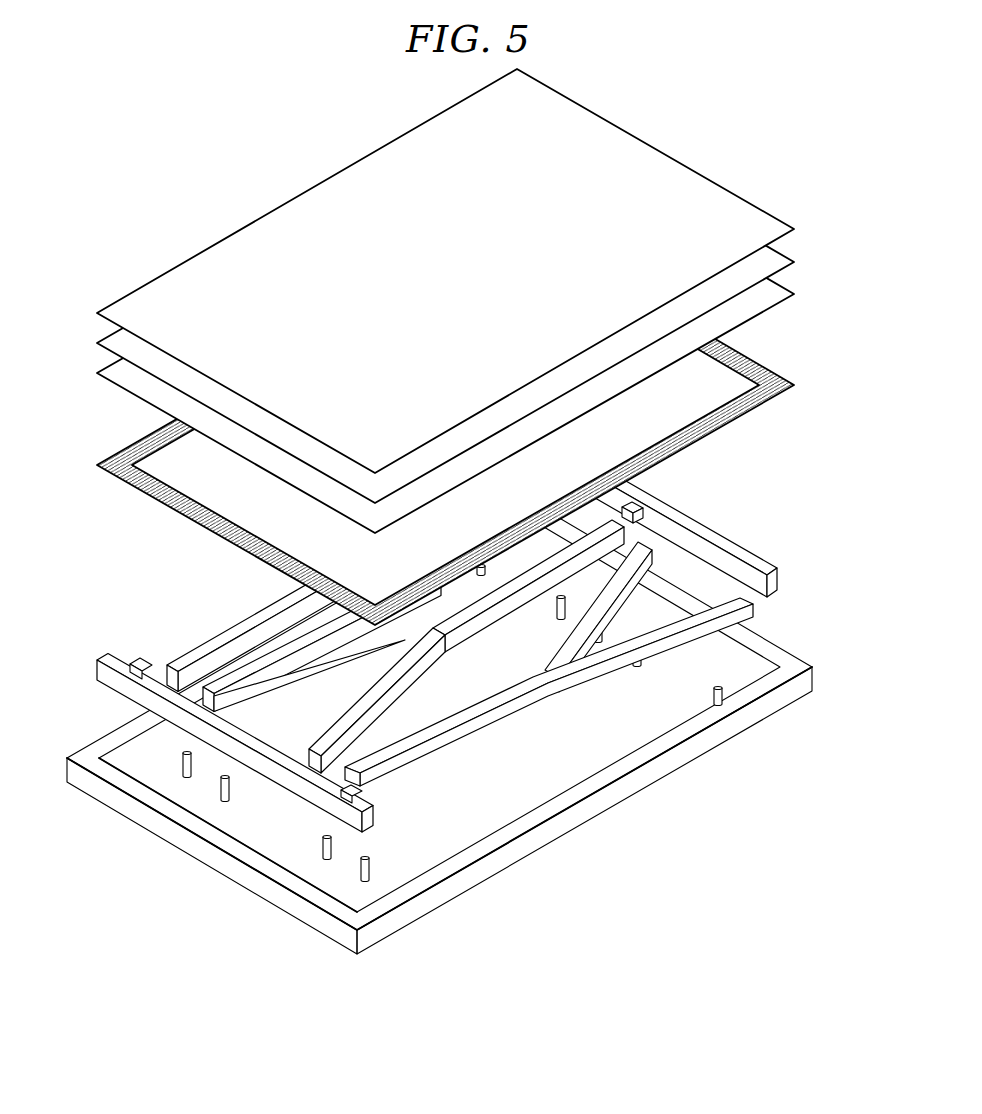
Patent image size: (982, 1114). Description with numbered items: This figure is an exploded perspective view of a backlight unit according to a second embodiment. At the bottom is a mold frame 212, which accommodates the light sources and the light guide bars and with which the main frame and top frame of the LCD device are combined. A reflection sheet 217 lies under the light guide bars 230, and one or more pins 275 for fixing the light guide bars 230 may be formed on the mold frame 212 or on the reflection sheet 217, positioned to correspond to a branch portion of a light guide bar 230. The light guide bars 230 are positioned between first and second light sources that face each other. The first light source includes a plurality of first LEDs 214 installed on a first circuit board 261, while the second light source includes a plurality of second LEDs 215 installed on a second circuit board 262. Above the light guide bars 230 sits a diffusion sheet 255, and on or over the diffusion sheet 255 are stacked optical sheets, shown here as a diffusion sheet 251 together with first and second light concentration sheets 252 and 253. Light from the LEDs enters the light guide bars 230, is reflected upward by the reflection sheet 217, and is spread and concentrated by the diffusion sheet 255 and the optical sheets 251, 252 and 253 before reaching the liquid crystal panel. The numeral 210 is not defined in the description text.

The optical sheet (diffusion sheet) 251 is at (760, 226).
The first light concentration sheet 252 is at (760, 261).
The second light concentration sheet 253 is at (760, 296).
The diffusion sheet 255 is at (752, 364).
The second LEDs 215 is at (637, 505).
The second circuit board 262 is at (757, 558).
The first circuit board 261 is at (108, 658).
The support bar 210 is at (743, 617).
The light guide bars 230 is at (205, 650).
The reflection sheet 217 is at (230, 818).
The first LEDs 214 is at (347, 793).
The pins 275 is at (368, 870).
The mold frame 212 is at (510, 862).